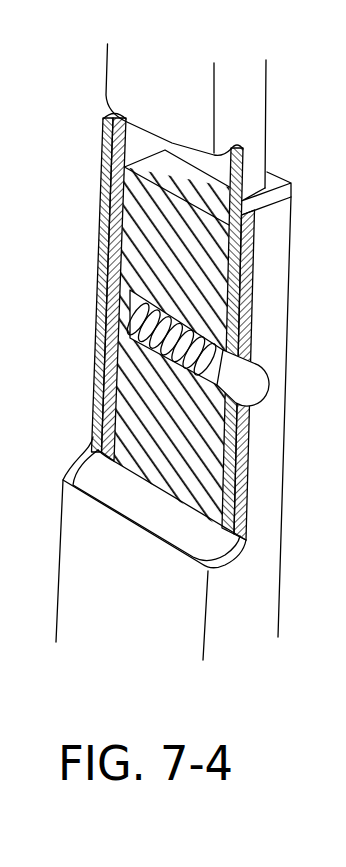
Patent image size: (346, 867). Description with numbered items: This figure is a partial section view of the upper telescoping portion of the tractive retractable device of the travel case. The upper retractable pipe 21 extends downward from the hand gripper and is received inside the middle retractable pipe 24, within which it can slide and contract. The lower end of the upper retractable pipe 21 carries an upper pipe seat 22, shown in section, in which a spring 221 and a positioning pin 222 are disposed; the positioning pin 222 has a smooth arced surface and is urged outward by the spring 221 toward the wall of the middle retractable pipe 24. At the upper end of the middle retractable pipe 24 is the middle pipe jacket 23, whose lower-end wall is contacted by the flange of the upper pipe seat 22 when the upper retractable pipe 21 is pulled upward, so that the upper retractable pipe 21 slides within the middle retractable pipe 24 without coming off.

The upper retractable pipe 21 is at (257, 106).
The upper pipe seat 22 is at (127, 218).
The spring 221 is at (133, 327).
The positioning pin 222 is at (267, 397).
The middle pipe jacket 23 is at (291, 183).
The middle retractable pipe 24 is at (280, 503).